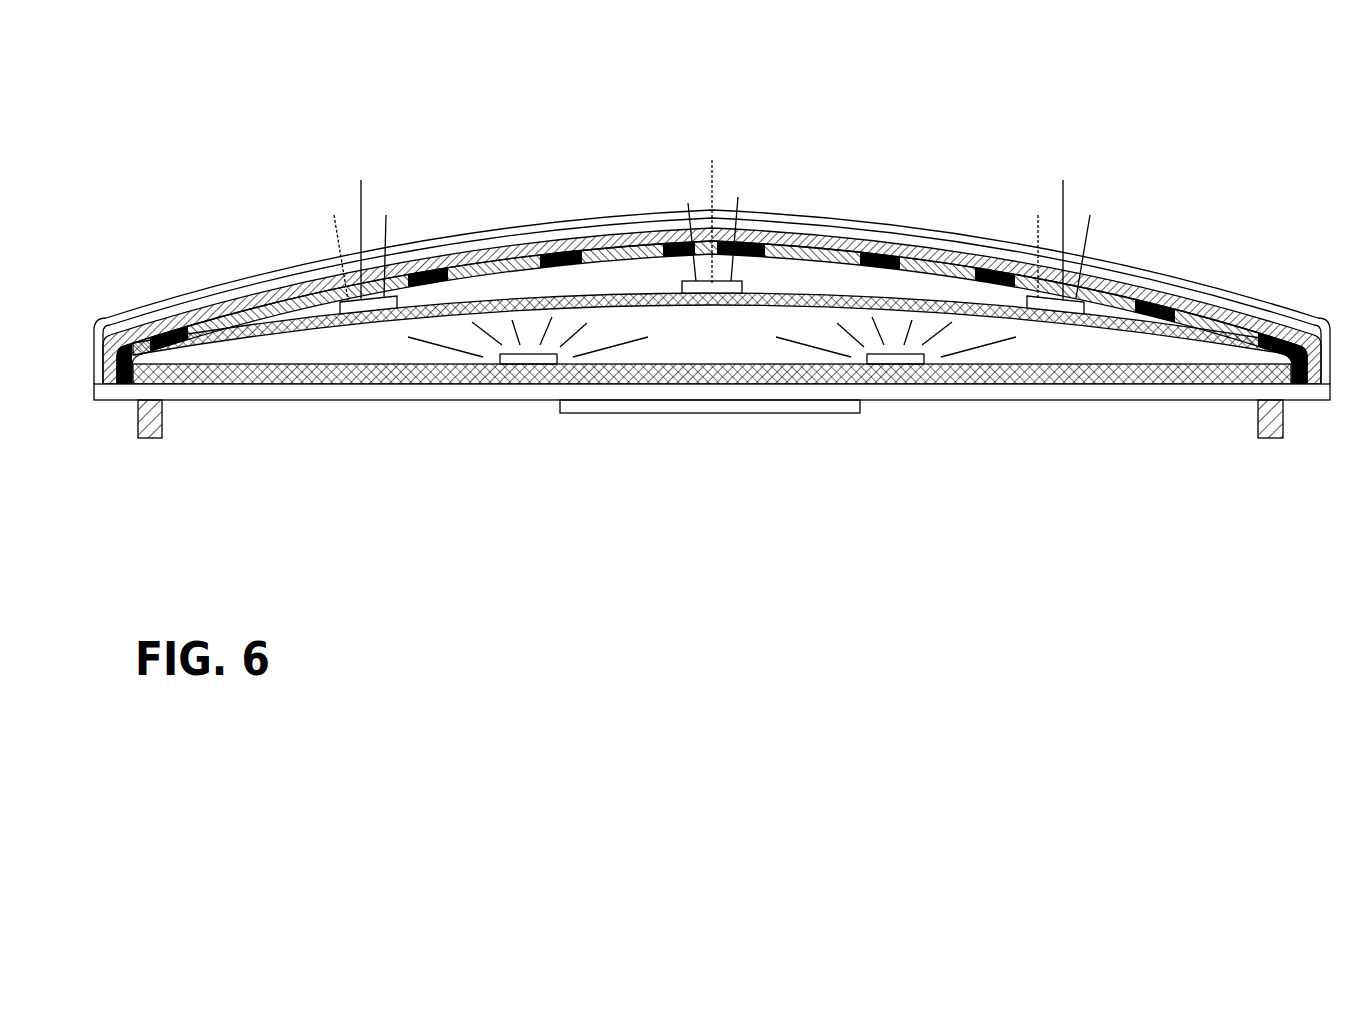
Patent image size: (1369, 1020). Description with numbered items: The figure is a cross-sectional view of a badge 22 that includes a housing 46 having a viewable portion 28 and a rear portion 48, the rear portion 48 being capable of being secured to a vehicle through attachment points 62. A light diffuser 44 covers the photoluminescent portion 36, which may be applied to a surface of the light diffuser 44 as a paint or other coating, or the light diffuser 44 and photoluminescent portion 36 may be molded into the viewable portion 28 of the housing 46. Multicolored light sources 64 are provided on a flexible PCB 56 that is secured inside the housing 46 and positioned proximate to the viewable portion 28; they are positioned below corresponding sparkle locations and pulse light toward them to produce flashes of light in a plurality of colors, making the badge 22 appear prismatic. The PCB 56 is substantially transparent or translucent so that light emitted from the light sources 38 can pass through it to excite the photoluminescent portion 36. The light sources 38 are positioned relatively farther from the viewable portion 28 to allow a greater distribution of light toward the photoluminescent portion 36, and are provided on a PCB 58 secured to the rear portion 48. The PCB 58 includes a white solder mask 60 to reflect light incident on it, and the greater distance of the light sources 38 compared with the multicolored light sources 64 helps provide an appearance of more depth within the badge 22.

The badge 22 is at (702, 297).
The viewable portion 28 is at (607, 228).
The photoluminescent portion 36 is at (712, 271).
The light sources 38 is at (520, 364).
The light diffuser 44 is at (273, 282).
The housing 46 is at (120, 304).
The rear portion 48 is at (1150, 392).
The flexible PCB 56 is at (495, 303).
The PCB 58 is at (1100, 378).
The white solder mask 60 is at (233, 363).
The attachment points 62 is at (153, 440).
The multicolored light sources 64 is at (355, 312).